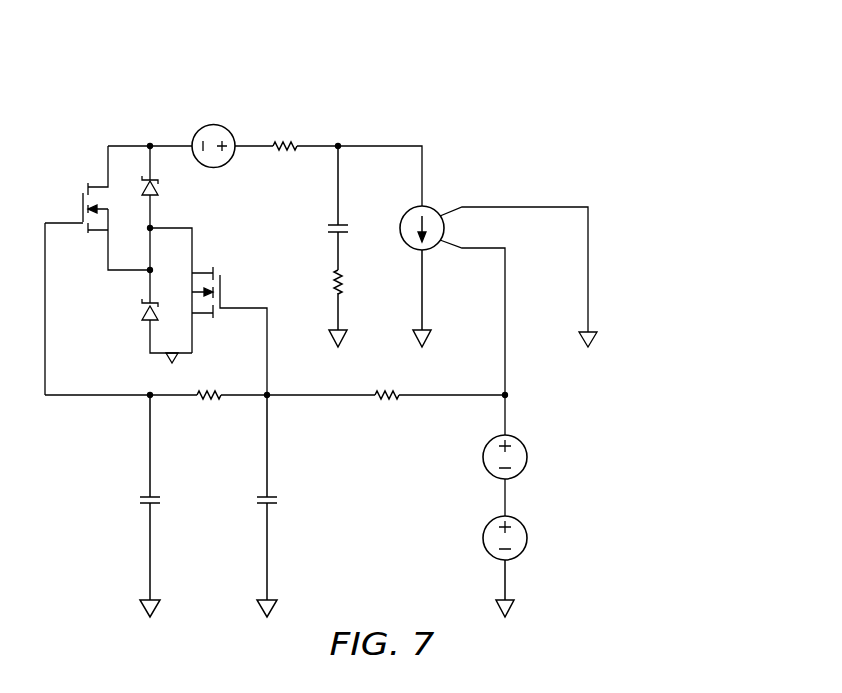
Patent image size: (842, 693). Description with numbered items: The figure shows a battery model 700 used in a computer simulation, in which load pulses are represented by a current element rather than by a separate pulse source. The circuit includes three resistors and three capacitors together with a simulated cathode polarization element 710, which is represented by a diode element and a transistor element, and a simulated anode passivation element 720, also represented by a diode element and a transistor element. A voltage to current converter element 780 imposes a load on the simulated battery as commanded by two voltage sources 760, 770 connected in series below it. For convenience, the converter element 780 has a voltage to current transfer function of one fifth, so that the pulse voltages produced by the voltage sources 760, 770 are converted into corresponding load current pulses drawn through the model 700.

The model 700 is at (195, 56).
The simulated cathode polarization element 710 is at (81, 202).
The simulated anode passivation element 720 is at (222, 282).
The voltage source 760 is at (483, 457).
The voltage source 770 is at (483, 539).
The voltage to current converter element 780 is at (435, 206).